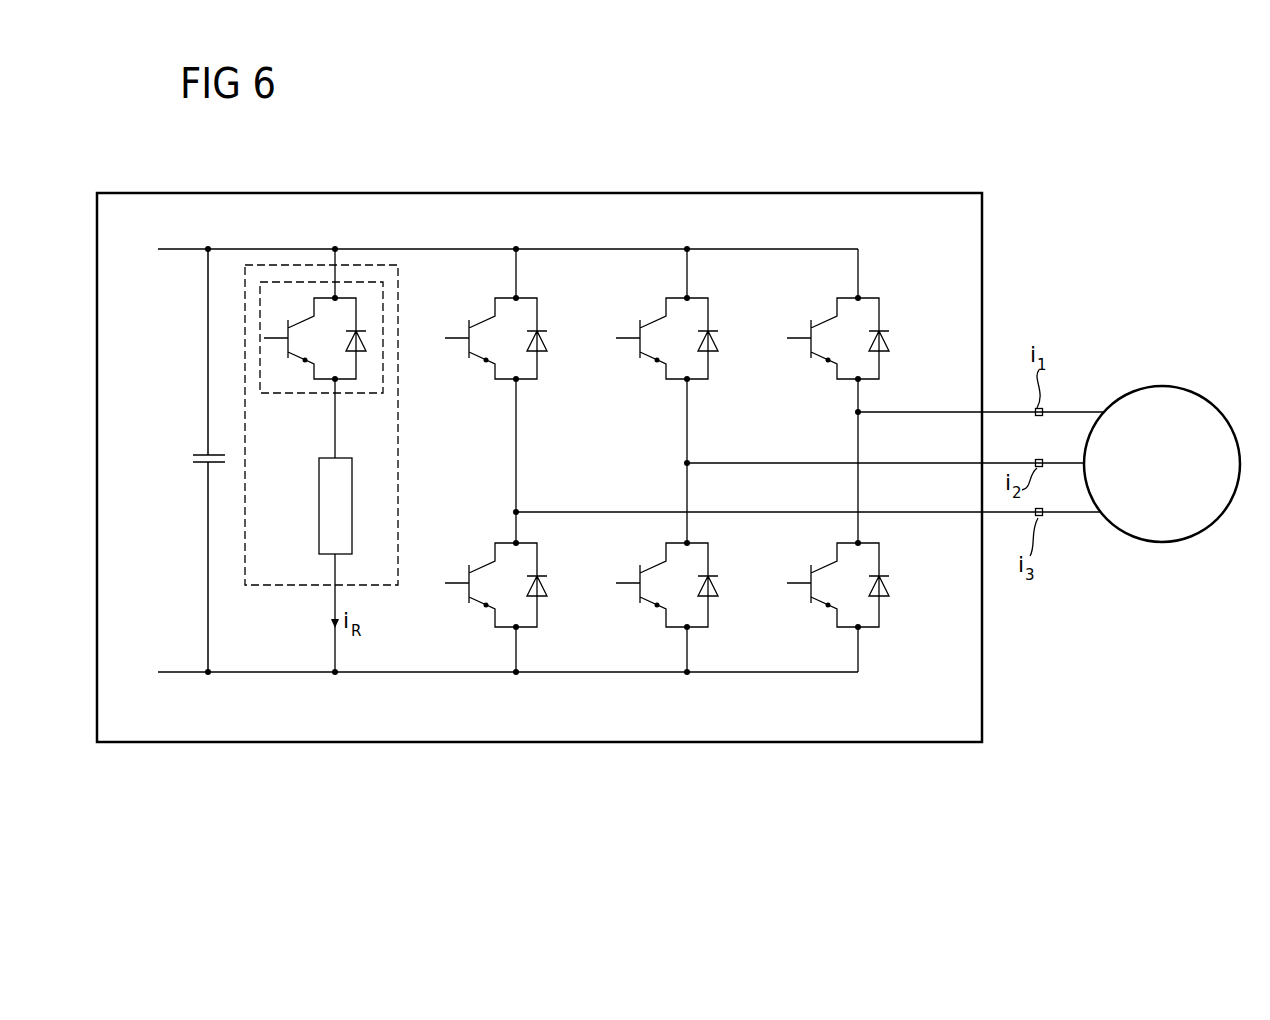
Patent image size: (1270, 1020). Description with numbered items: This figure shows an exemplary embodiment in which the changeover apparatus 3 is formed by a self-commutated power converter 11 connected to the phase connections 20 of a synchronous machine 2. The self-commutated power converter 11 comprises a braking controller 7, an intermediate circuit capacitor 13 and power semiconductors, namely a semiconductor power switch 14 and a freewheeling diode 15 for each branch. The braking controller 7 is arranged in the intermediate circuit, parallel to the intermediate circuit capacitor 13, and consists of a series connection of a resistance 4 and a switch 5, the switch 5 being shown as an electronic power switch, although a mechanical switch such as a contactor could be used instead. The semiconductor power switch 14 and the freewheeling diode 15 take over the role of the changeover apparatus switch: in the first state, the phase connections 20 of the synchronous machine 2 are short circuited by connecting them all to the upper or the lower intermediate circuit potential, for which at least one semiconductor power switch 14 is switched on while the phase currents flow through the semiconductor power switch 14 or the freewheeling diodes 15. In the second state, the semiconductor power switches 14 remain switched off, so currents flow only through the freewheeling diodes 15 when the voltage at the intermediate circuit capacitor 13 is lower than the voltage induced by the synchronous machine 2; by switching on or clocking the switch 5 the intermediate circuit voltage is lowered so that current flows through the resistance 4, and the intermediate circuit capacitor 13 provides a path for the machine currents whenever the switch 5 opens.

The synchronous machine 2 is at (1160, 385).
The changeover apparatus 3 is at (586, 467).
The self-commutated power converter 11 is at (982, 680).
The resistance 4 is at (352, 502).
The switch 5 is at (363, 282).
The braking controller 7 is at (398, 445).
The intermediate circuit capacitor 13 is at (206, 455).
The semiconductor power switch 14 is at (811, 597).
The freewheeling diode 15 is at (929, 571).
The phase connections 20 is at (1068, 518).